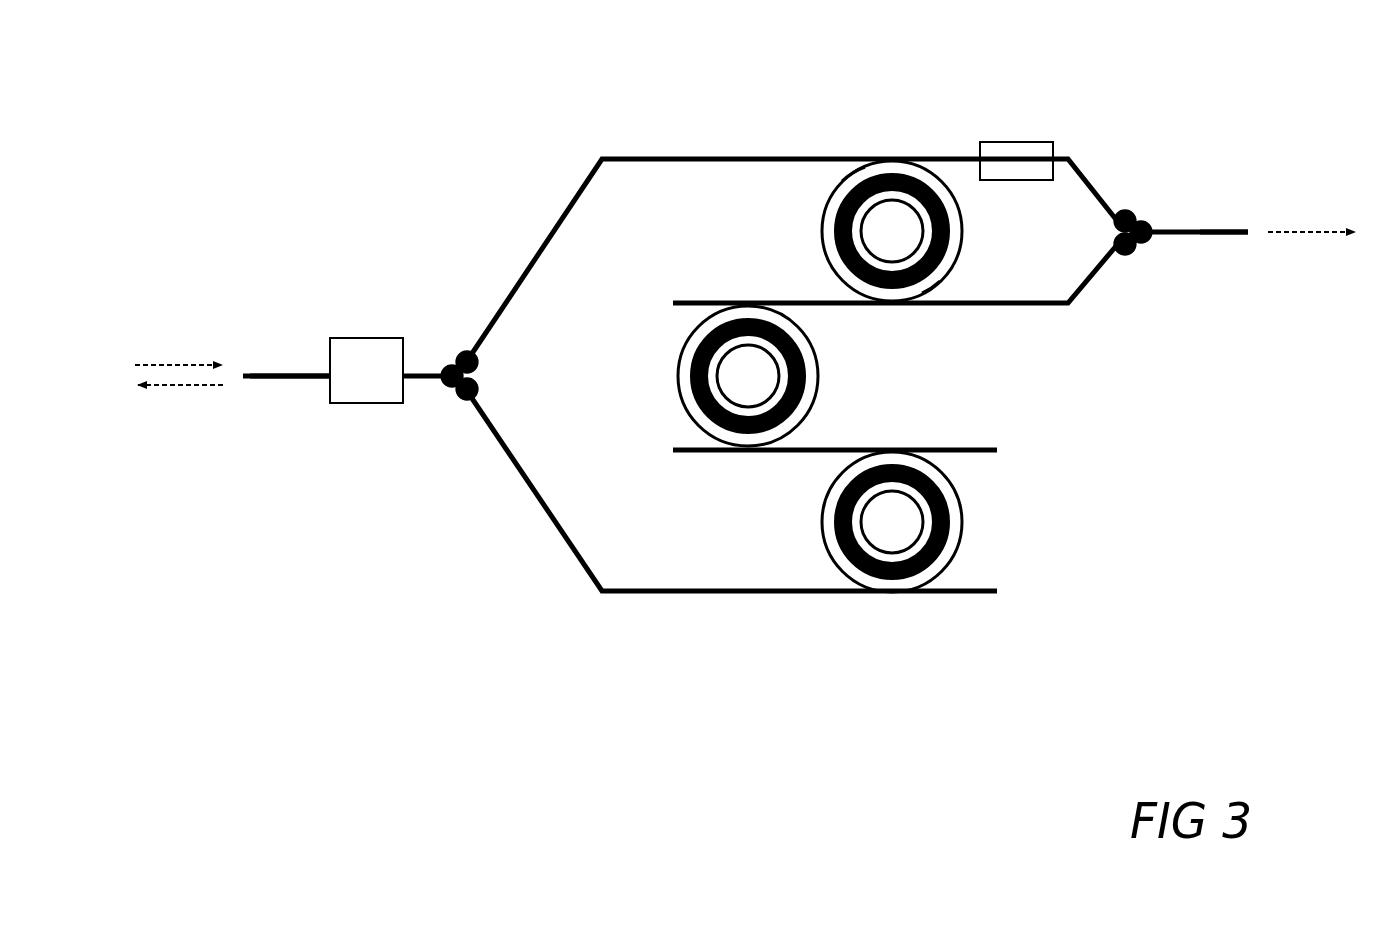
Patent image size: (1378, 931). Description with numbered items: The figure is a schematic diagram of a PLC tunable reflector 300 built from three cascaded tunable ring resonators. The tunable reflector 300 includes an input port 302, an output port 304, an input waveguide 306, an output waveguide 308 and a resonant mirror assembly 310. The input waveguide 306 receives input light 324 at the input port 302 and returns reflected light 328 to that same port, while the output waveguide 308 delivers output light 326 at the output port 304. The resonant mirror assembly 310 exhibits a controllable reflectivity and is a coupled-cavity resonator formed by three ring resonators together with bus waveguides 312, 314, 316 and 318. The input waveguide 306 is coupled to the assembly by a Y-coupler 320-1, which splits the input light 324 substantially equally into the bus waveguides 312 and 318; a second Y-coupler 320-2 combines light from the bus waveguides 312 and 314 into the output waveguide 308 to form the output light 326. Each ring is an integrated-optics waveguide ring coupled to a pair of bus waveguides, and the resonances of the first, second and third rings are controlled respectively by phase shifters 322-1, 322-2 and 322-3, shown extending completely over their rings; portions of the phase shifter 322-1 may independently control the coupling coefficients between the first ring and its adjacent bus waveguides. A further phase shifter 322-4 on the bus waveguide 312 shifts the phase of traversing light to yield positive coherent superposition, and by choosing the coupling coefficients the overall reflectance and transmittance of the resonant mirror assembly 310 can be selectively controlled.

The tunable reflector 300 is at (1286, 29).
The input port 302 is at (266, 376).
The output port 304 is at (1250, 235).
The input waveguide 306 is at (293, 378).
The output waveguide 308 is at (1195, 235).
The resonant mirror assembly 310 is at (853, 384).
The bus waveguide 312 is at (656, 159).
The bus waveguide 314 is at (1016, 306).
The bus waveguide 316 is at (980, 450).
The bus waveguide 318 is at (746, 592).
The coupler 320-1 is at (467, 392).
The coupler 320-2 is at (1146, 226).
The phase shifter 322-1 is at (832, 250).
The phase shifter 322-2 is at (678, 376).
The phase shifter 322-3 is at (830, 544).
The phase shifter 322-4 is at (1003, 142).
The input light 324 is at (206, 362).
The output light 326 is at (1300, 226).
The reflected light 328 is at (158, 390).